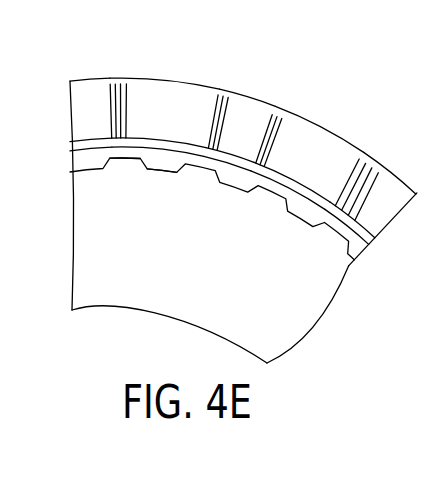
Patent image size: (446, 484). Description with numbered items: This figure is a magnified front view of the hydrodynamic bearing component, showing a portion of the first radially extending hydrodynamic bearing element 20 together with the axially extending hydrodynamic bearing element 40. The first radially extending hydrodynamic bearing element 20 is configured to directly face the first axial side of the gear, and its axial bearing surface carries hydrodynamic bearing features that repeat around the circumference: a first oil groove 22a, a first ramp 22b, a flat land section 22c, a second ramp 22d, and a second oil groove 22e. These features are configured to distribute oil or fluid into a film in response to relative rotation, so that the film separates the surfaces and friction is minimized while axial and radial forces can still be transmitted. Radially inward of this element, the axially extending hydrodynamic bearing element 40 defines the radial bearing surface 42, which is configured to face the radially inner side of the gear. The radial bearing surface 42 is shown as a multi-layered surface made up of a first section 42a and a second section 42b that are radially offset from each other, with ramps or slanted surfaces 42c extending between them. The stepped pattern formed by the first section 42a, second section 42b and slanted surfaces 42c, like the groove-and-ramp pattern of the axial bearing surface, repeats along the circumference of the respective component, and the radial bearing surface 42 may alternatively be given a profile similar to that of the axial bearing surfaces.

The first radially extending hydrodynamic bearing element 20 is at (290, 150).
The first oil groove 22a is at (103, 139).
The first ramp 22b is at (173, 122).
The flat land section 22c is at (240, 140).
The second ramp 22d is at (313, 170).
The second oil groove 22e is at (360, 160).
The axially extending hydrodynamic bearing element 40 is at (298, 312).
The radial bearing surface 42 is at (369, 244).
The first section 42a is at (131, 148).
The second section 42b is at (153, 172).
The slanted surface 42c is at (150, 152).